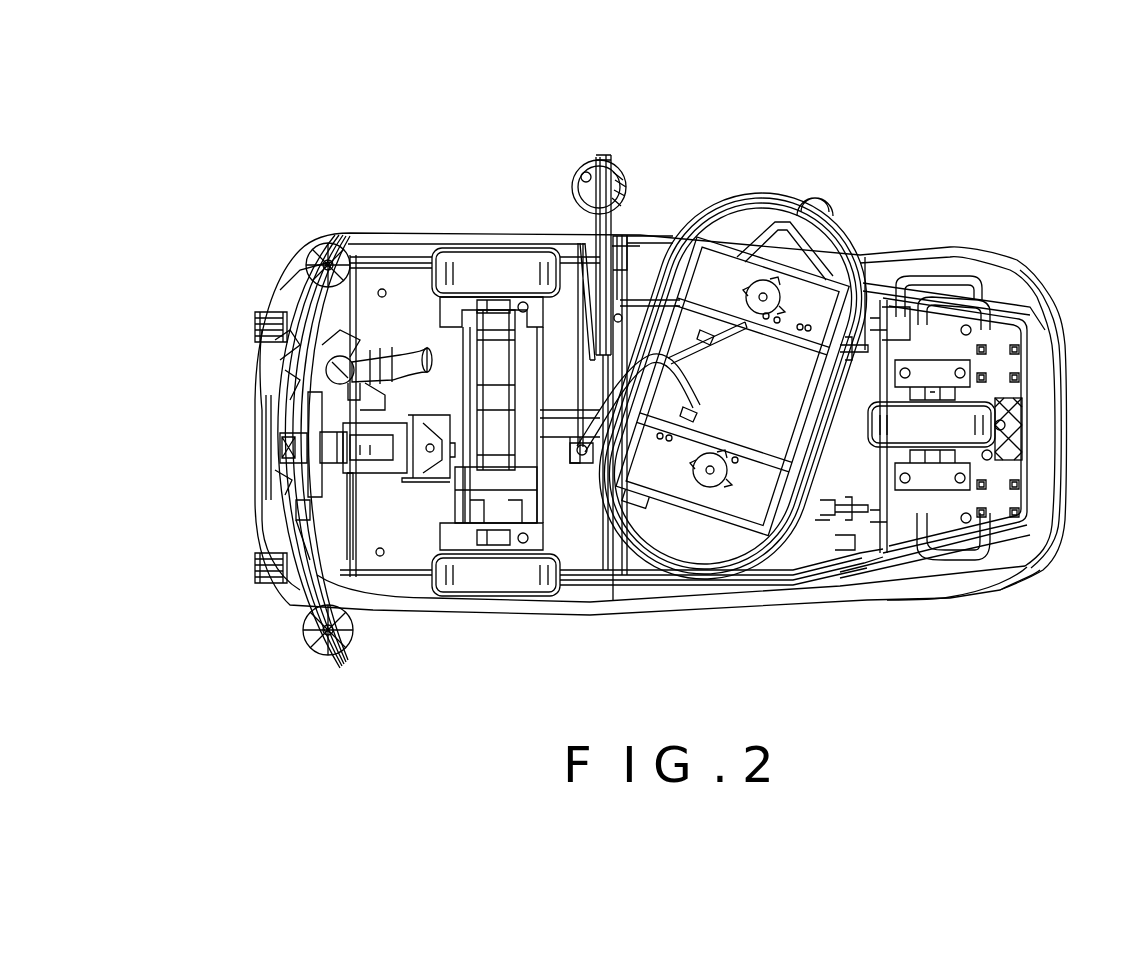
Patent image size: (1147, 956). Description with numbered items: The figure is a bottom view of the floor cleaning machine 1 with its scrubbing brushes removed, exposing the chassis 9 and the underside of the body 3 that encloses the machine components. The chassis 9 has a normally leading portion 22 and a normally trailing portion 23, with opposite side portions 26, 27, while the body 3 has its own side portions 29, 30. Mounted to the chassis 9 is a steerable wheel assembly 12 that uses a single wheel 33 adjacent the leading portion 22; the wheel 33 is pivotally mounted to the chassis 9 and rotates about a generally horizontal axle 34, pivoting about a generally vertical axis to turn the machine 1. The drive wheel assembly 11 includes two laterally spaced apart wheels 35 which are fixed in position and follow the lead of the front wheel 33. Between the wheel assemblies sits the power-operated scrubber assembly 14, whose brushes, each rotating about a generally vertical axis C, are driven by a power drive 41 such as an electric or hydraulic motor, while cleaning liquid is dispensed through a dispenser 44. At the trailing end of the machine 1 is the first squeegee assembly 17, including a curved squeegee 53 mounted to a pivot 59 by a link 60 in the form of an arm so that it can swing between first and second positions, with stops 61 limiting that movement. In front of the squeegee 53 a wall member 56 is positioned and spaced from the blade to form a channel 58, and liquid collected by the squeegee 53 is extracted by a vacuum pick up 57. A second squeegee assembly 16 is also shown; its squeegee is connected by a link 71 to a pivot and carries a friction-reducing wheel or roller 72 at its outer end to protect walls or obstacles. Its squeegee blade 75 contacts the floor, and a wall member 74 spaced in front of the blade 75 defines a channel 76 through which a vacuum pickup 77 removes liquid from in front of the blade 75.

The floor cleaning machine 1 is at (822, 90).
The body 3 is at (427, 232).
The chassis 9 is at (845, 572).
The drive wheel assembly 11 is at (467, 268).
The steerable wheel assembly 12 is at (983, 423).
The scrubber assembly 14 is at (743, 217).
The second squeegee assembly 16 is at (588, 156).
The first squeegee assembly 17 is at (296, 600).
The leading portion 22 is at (1013, 513).
The trailing portion 23 is at (375, 280).
The chassis side portion 26 is at (873, 283).
The chassis side portion 27 is at (763, 577).
The body side portion 29 is at (668, 262).
The body side portion 30 is at (665, 613).
The front wheel 33 is at (987, 440).
The axle 34 is at (932, 387).
The drive wheels 35 is at (547, 267).
The power drive 41 is at (766, 316).
The dispenser 44 is at (707, 388).
The squeegee 53 is at (346, 652).
The wall member 56 is at (307, 530).
The vacuum pick up 57 is at (283, 439).
The channel 58 is at (290, 515).
The pivot 59 is at (455, 447).
The link 60 is at (333, 443).
The stops 61 is at (440, 414).
The link 71 is at (658, 235).
The friction-reducing wheel or roller 72 is at (640, 257).
The wall member 74 is at (620, 173).
The squeegee blade 75 is at (598, 155).
The channel 76 is at (605, 158).
The vacuum pickup 77 is at (598, 283).
The brush axis C is at (769, 297).